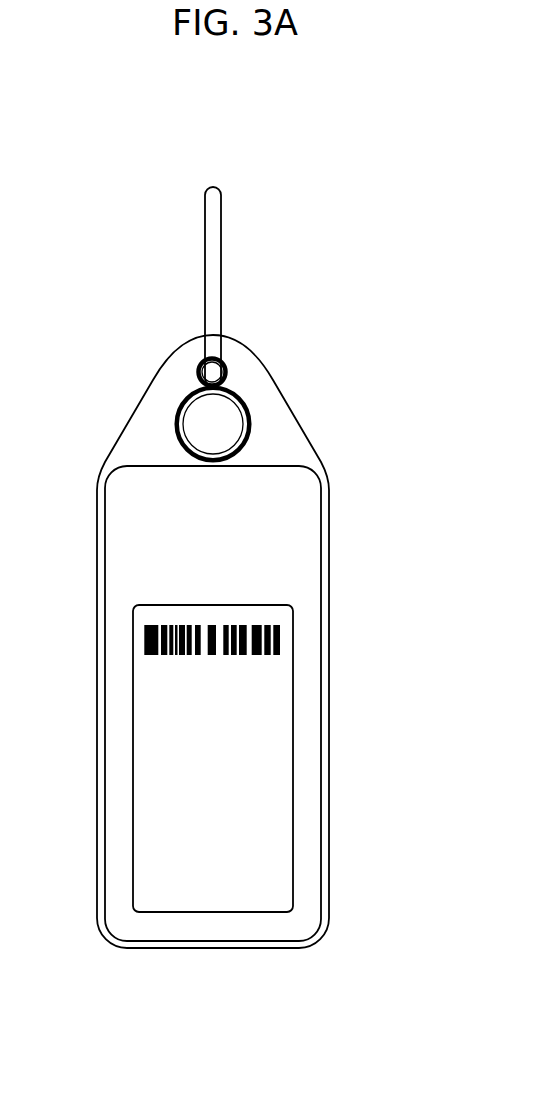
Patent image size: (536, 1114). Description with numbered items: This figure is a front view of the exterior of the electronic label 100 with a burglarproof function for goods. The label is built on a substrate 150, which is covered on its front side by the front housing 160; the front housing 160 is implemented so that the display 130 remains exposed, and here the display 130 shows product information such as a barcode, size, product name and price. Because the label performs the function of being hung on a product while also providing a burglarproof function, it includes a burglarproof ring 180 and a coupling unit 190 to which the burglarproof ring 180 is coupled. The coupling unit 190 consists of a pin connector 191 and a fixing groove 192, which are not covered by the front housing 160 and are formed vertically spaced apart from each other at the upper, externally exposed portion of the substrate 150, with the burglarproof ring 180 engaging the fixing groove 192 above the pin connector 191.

The electronic label 100 is at (339, 311).
The display 130 is at (150, 727).
The substrate 150 is at (140, 423).
The front housing 160 is at (307, 687).
The burglarproof ring 180 is at (222, 250).
The coupling unit 190 is at (316, 410).
The pin connector 191 is at (220, 427).
The fixing groove 192 is at (227, 371).